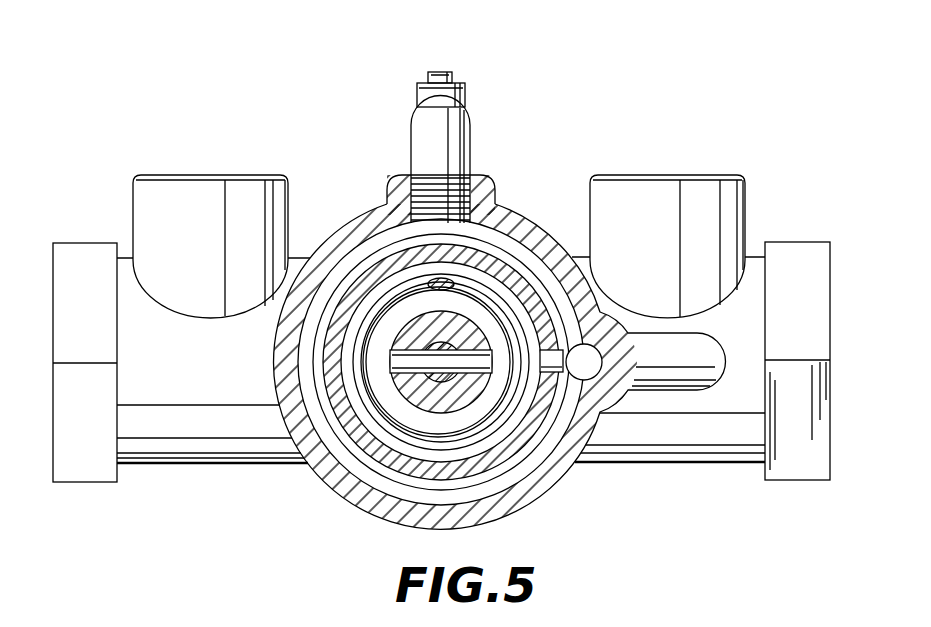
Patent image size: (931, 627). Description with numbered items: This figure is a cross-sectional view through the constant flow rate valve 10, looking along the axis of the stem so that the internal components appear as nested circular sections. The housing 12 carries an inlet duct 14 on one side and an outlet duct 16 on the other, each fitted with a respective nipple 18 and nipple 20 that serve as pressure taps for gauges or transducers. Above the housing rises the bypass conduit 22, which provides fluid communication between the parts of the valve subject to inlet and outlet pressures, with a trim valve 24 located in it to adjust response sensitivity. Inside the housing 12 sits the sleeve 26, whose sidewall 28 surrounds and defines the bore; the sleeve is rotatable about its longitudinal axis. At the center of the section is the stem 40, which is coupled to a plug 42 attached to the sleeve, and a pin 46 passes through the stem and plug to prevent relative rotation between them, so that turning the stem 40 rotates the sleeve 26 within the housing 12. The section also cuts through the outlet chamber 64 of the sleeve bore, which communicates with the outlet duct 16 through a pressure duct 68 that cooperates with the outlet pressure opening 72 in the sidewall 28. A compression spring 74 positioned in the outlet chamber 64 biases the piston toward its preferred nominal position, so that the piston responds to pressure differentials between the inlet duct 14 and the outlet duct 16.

The constant flow rate valve 10 is at (271, 97).
The housing 12 is at (402, 518).
The inlet duct 14 is at (190, 428).
The outlet duct 16 is at (695, 438).
The nipple 18 is at (165, 193).
The nipple 20 is at (650, 195).
The bypass conduit 22 is at (462, 120).
The trim valve 24 is at (467, 88).
The sleeve 26 is at (467, 247).
The sidewall 28 is at (386, 262).
The stem 40 is at (425, 398).
The plug 42 is at (343, 483).
The pin 46 is at (493, 360).
The outlet chamber 64 is at (423, 398).
The pressure duct 68 is at (590, 376).
The outlet pressure opening 72 is at (565, 345).
The compression spring 74 is at (375, 395).